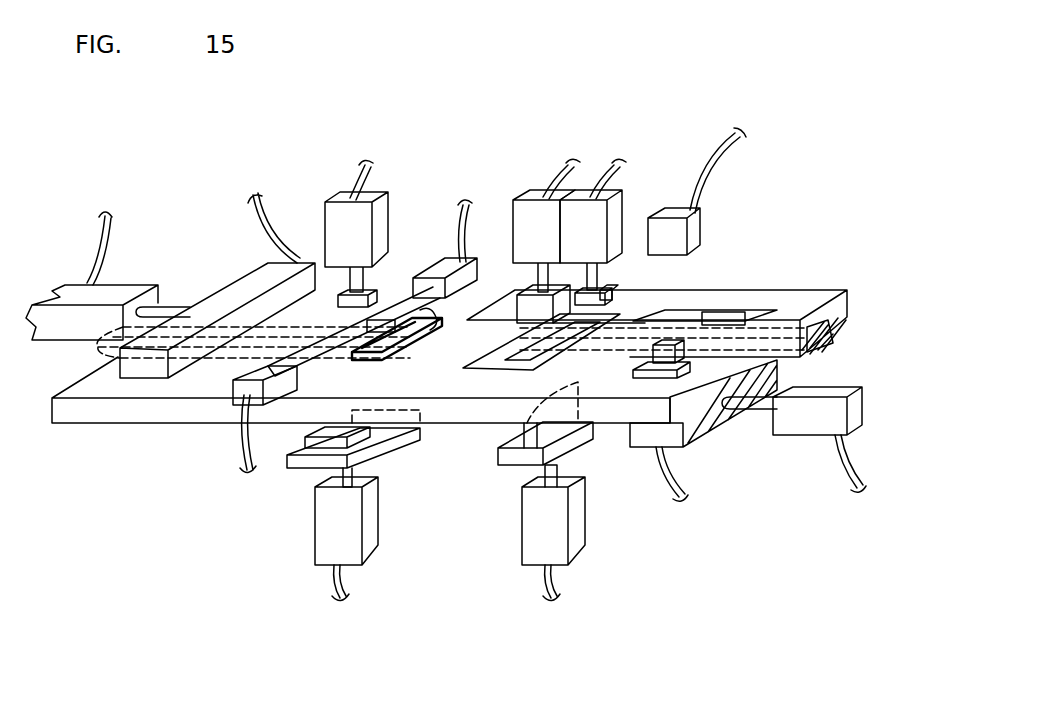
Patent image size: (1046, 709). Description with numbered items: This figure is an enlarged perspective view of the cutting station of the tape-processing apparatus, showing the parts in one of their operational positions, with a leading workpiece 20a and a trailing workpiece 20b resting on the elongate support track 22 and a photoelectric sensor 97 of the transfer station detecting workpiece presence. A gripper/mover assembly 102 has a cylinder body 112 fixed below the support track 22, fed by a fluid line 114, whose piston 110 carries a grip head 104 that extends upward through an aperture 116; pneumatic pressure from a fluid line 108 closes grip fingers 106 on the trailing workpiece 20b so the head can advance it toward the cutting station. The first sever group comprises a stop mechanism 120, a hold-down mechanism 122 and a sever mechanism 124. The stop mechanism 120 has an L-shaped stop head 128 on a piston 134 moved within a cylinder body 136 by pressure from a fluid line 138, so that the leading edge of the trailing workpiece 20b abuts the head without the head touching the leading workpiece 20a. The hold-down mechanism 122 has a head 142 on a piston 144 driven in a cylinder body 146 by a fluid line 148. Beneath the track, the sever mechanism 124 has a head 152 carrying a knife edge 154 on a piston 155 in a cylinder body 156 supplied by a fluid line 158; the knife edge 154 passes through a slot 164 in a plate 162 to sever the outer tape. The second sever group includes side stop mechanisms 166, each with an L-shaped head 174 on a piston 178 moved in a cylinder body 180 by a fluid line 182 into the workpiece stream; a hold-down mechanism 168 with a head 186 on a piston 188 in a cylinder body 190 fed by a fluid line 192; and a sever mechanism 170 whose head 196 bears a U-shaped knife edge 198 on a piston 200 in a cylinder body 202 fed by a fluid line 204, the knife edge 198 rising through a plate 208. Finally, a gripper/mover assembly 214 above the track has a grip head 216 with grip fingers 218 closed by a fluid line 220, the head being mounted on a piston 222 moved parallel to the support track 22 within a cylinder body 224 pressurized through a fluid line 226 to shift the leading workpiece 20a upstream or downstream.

The leading workpiece 20a is at (112, 343).
The trailing workpiece 20b is at (816, 320).
The support track 22 is at (85, 412).
The sensor 97 is at (690, 238).
The gripper/mover assembly 102 is at (747, 550).
The grip head 104 is at (702, 422).
The grip fingers 106 is at (722, 310).
The fluid line 108 is at (663, 476).
The piston 110 is at (757, 402).
The cylinder body 112 is at (812, 418).
The fluid line 114 is at (843, 478).
The aperture 116 is at (688, 314).
The stop mechanism 120 is at (529, 86).
The hold-down mechanism 122 is at (627, 86).
The sever mechanism 124 is at (509, 570).
The L-shaped stop head 128 is at (532, 288).
The piston 134 is at (544, 241).
The cylinder body 136 is at (533, 208).
The fluid line 138 is at (582, 173).
The head 142 is at (605, 290).
The piston 144 is at (591, 247).
The cylinder body 146 is at (618, 227).
The fluid line 148 is at (610, 174).
The head 152 is at (568, 442).
The knife edge 154 is at (527, 430).
The piston 155 is at (548, 470).
The cylinder body 156 is at (535, 515).
The fluid line 158 is at (553, 585).
The plate 162 is at (460, 370).
The slot 164 is at (512, 362).
The stop mechanism 166 is at (462, 138).
The hold-down mechanism 168 is at (332, 147).
The sever mechanism 170 is at (299, 570).
The L-shaped head 174 is at (423, 322).
The piston 178 is at (420, 306).
The cylinder body 180 is at (470, 266).
The fluid line 182 is at (466, 214).
The head 186 is at (455, 206).
The piston 188 is at (356, 249).
The cylinder body 190 is at (332, 225).
The fluid line 192 is at (368, 184).
The head 196 is at (362, 468).
The knife edge 198 is at (365, 455).
The piston 200 is at (328, 476).
The cylinder body 202 is at (328, 517).
The fluid line 204 is at (343, 585).
The plate 208 is at (365, 358).
The gripper/mover assembly 214 is at (104, 185).
The grip head 216 is at (240, 288).
The grip fingers 218 is at (213, 382).
The fluid line 220 is at (252, 195).
The piston 222 is at (177, 307).
The cylinder body 224 is at (118, 295).
The fluid line 226 is at (98, 247).